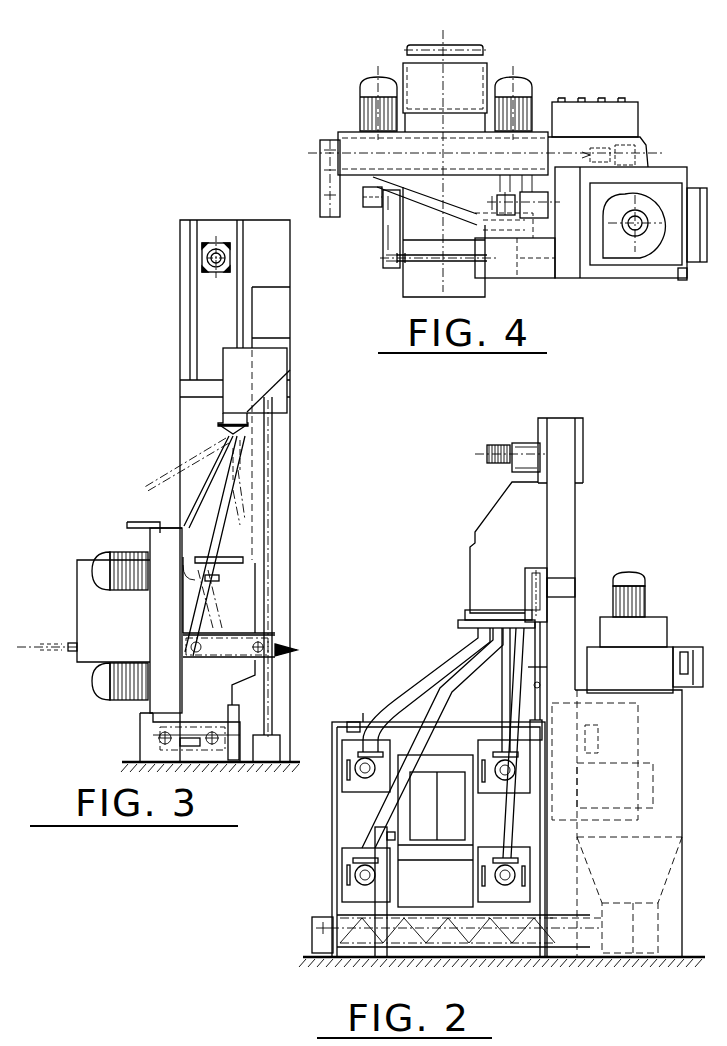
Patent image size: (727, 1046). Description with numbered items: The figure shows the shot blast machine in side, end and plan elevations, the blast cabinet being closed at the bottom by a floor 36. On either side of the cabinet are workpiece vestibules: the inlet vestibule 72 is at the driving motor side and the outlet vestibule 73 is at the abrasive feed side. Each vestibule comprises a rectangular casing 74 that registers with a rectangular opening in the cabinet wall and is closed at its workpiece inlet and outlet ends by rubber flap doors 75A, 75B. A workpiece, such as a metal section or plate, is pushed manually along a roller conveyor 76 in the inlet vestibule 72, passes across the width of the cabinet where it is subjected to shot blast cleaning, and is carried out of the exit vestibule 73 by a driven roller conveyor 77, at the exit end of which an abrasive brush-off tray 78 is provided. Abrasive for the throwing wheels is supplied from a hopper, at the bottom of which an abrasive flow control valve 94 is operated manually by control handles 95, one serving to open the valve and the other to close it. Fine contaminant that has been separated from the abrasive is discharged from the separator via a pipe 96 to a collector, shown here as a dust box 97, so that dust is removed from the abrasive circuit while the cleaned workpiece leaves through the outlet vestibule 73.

In FIG. 2, the floor 36 is at (500, 958).
In FIG. 3, the inlet vestibule 72 is at (82, 552).
In FIG. 2, the outlet vestibule 73 is at (438, 725).
In FIG. 2, the rectangular casing 74 is at (420, 762).
In FIG. 2, the rubber flap door 75A is at (417, 805).
In FIG. 2, the rubber flap door 75B is at (452, 837).
In FIG. 4, the roller conveyor 76 is at (492, 48).
In FIG. 3, the roller conveyor 76 is at (49, 632).
In FIG. 3, the driven roller conveyor 77 is at (272, 635).
In FIG. 4, the abrasive brush-off tray 78 is at (422, 273).
In FIG. 3, the abrasive brush-off tray 78 is at (297, 652).
In FIG. 2, the abrasive flow control valve 94 is at (483, 617).
In FIG. 2, the control handles 95 is at (537, 638).
In FIG. 3, the pipe 96 is at (272, 510).
In FIG. 2, the pipe 96 is at (548, 572).
In FIG. 3, the dust box 97 is at (268, 752).